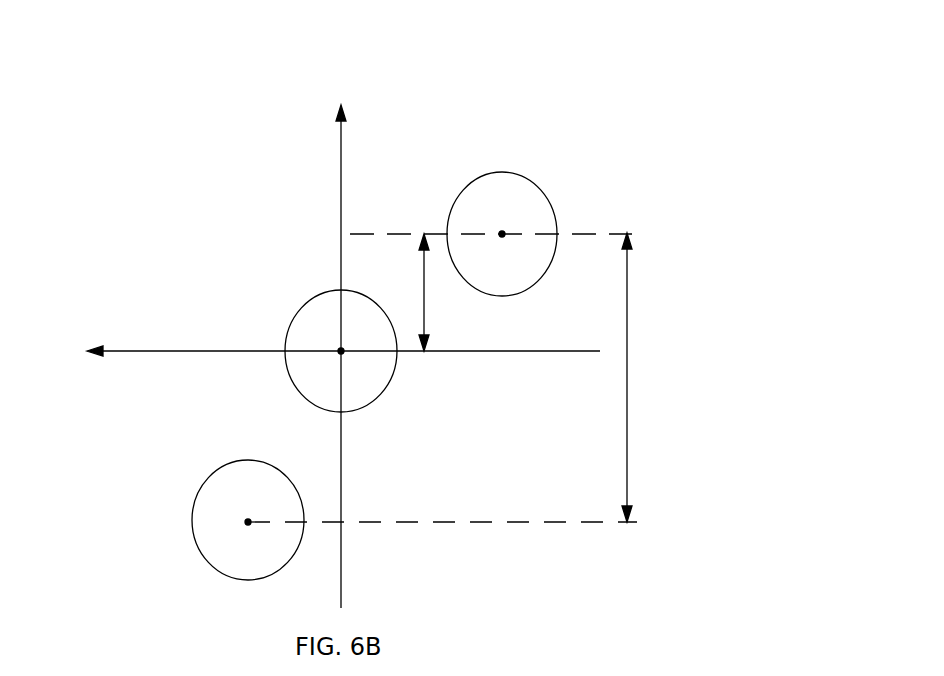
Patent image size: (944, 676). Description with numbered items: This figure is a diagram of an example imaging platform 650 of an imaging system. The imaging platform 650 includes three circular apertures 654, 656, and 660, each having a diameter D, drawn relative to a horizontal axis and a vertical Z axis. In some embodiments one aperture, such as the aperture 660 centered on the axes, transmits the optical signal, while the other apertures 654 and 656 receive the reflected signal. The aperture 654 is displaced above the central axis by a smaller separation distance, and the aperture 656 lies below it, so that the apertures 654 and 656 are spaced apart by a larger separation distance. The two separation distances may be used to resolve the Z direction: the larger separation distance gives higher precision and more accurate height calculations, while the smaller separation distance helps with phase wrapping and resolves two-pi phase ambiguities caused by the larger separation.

The imaging platform 650 is at (471, 96).
The circular aperture 654 is at (548, 213).
The circular aperture 656 is at (193, 507).
The circular aperture 660 is at (300, 312).